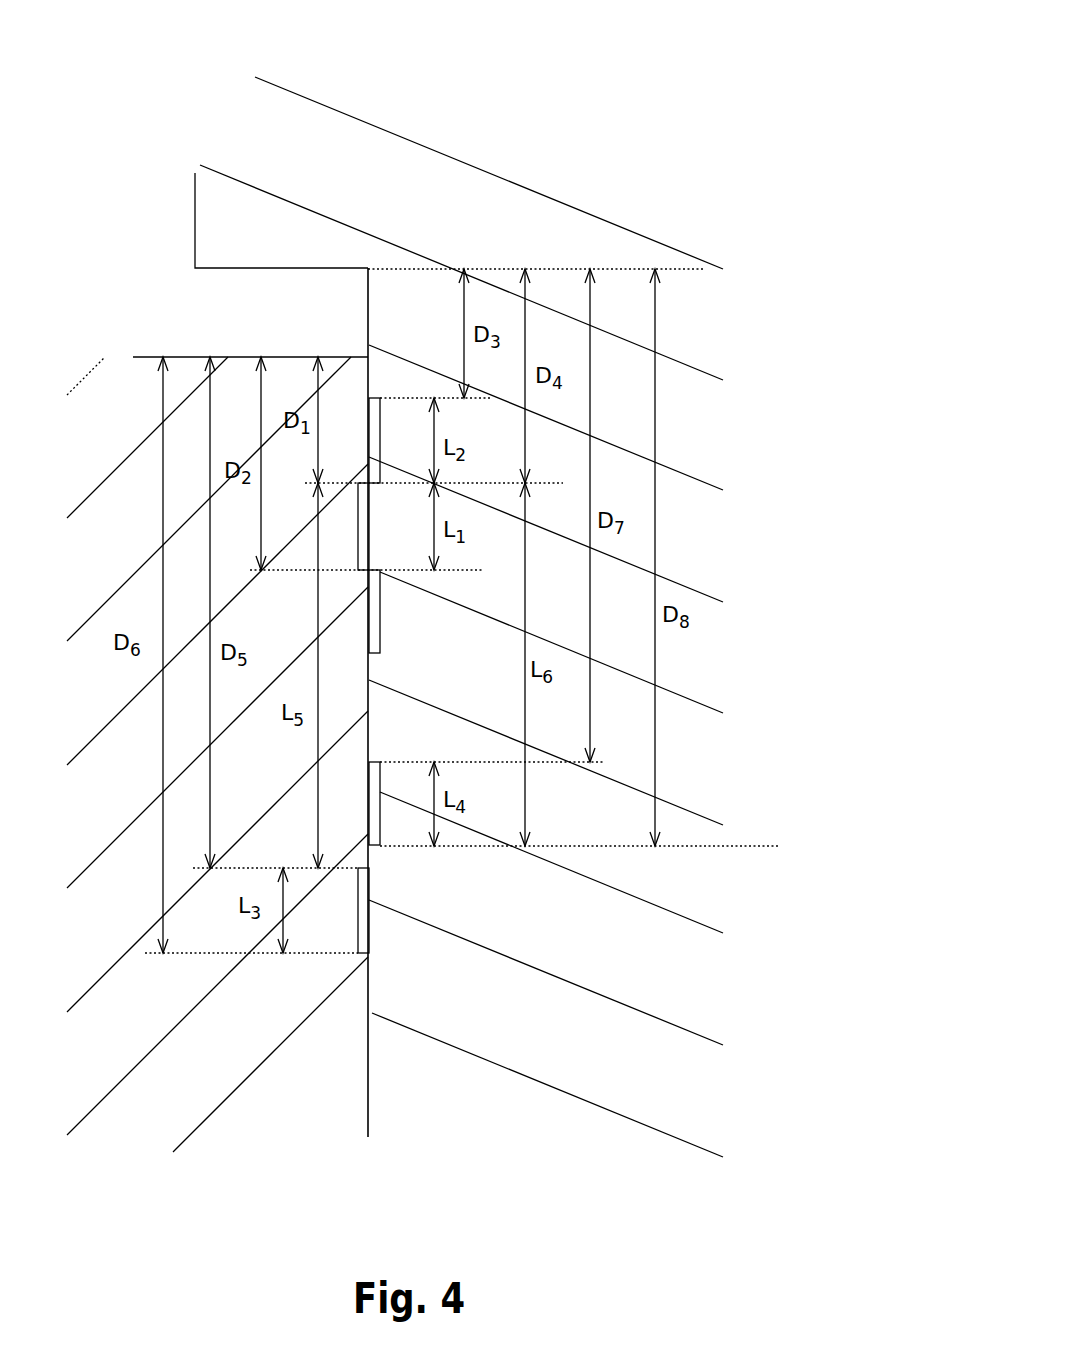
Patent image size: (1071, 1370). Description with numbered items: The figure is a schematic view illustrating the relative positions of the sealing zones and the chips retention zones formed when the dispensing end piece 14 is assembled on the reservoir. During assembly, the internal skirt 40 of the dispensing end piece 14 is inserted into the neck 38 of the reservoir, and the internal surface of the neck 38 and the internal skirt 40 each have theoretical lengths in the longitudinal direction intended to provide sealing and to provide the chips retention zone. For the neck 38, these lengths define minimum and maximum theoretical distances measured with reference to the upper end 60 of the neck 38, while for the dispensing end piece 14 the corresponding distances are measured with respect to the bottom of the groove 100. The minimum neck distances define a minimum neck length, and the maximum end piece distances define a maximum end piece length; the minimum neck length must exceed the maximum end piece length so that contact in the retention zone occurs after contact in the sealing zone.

The dispensing end piece 14 is at (557, 115).
The groove 100 is at (262, 268).
The upper end of the neck 60 is at (243, 357).
The neck 38 is at (217, 1053).
The internal skirt 40 is at (588, 1053).